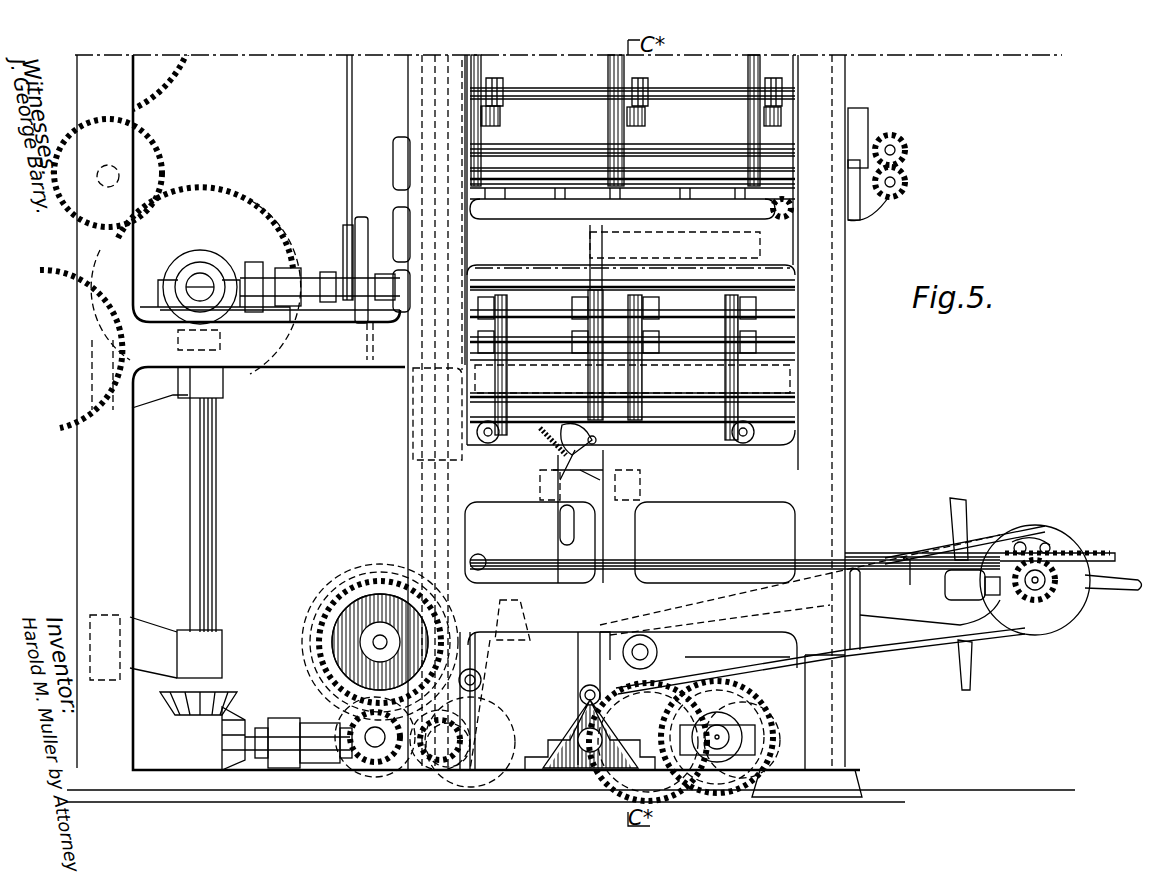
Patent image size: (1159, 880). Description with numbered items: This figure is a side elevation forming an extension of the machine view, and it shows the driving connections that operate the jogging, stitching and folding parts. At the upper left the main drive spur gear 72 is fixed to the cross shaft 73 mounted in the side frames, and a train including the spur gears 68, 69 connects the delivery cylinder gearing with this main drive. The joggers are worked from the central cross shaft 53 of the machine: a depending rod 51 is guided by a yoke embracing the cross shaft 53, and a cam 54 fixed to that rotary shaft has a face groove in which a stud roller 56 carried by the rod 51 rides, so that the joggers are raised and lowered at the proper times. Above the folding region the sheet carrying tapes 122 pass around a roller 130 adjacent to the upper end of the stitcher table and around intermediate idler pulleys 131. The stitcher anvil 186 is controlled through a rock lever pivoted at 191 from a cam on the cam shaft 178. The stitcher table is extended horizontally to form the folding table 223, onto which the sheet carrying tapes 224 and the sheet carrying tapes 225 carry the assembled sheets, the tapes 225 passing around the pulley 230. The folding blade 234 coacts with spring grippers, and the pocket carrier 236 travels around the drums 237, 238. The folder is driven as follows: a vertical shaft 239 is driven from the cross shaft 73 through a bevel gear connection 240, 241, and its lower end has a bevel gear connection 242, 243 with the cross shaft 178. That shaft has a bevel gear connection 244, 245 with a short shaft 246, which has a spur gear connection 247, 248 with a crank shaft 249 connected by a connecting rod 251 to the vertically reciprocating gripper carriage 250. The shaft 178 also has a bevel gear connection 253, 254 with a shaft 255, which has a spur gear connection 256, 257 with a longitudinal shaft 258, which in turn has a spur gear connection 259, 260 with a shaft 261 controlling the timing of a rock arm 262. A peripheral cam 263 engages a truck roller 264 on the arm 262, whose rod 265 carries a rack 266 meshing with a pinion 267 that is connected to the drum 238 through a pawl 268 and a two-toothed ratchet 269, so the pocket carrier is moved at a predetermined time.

The depending rod 51 is at (347, 115).
The central cross shaft 53 is at (388, 341).
The cam 54 is at (360, 262).
The stud roller 56 is at (345, 235).
The spur gear 68 is at (150, 158).
The spur gear 69 is at (97, 59).
The main drive spur gear 72 is at (196, 273).
The cross shaft 73 is at (198, 283).
The sheet carrying tapes 122 is at (500, 80).
The roller 130 is at (632, 181).
The intermediate idler pulleys 131 is at (505, 124).
The cam shaft 178 is at (846, 736).
The stitcher anvil 186 is at (600, 280).
The rock lever pivot 191 is at (500, 282).
The folding table 223 is at (631, 421).
The sheet carrying tapes 224 is at (632, 383).
The sheet carrying tapes 225 is at (740, 445).
The pulley 230 is at (730, 436).
The folding blade 234 is at (597, 438).
The pocket carrier 236 is at (995, 538).
The drum 237 is at (820, 661).
The drum 238 is at (1035, 580).
The vertical shaft 239 is at (214, 510).
The bevel gear 240 is at (205, 250).
The bevel gear 241 is at (232, 340).
The bevel gear 242 is at (186, 711).
The bevel gear 243 is at (222, 742).
The bevel gear 244 is at (752, 712).
The bevel gear 245 is at (700, 680).
The short shaft 246 is at (807, 800).
The spur gear 247 is at (715, 750).
The spur gear 248 is at (648, 742).
The crank shaft 249 is at (590, 745).
The gripper carriage 250 is at (605, 455).
The connecting rod 251 is at (540, 701).
The bevel gear 253 is at (330, 725).
The bevel gear 254 is at (300, 760).
The shaft 255 is at (430, 750).
The spur gear 256 is at (372, 745).
The spur gear 257 is at (308, 640).
The longitudinal shaft 258 is at (322, 630).
The spur gear 259 is at (345, 600).
The spur gear 260 is at (490, 712).
The shaft 261 is at (455, 742).
The rock arm 262 is at (478, 672).
The peripheral cam 263 is at (380, 640).
The truck roller 264 is at (495, 684).
The rod 265 is at (730, 558).
The rack 266 is at (1062, 542).
The pinion 267 is at (1058, 585).
The pawl 268 is at (1043, 545).
The two-toothed ratchet 269 is at (1040, 600).